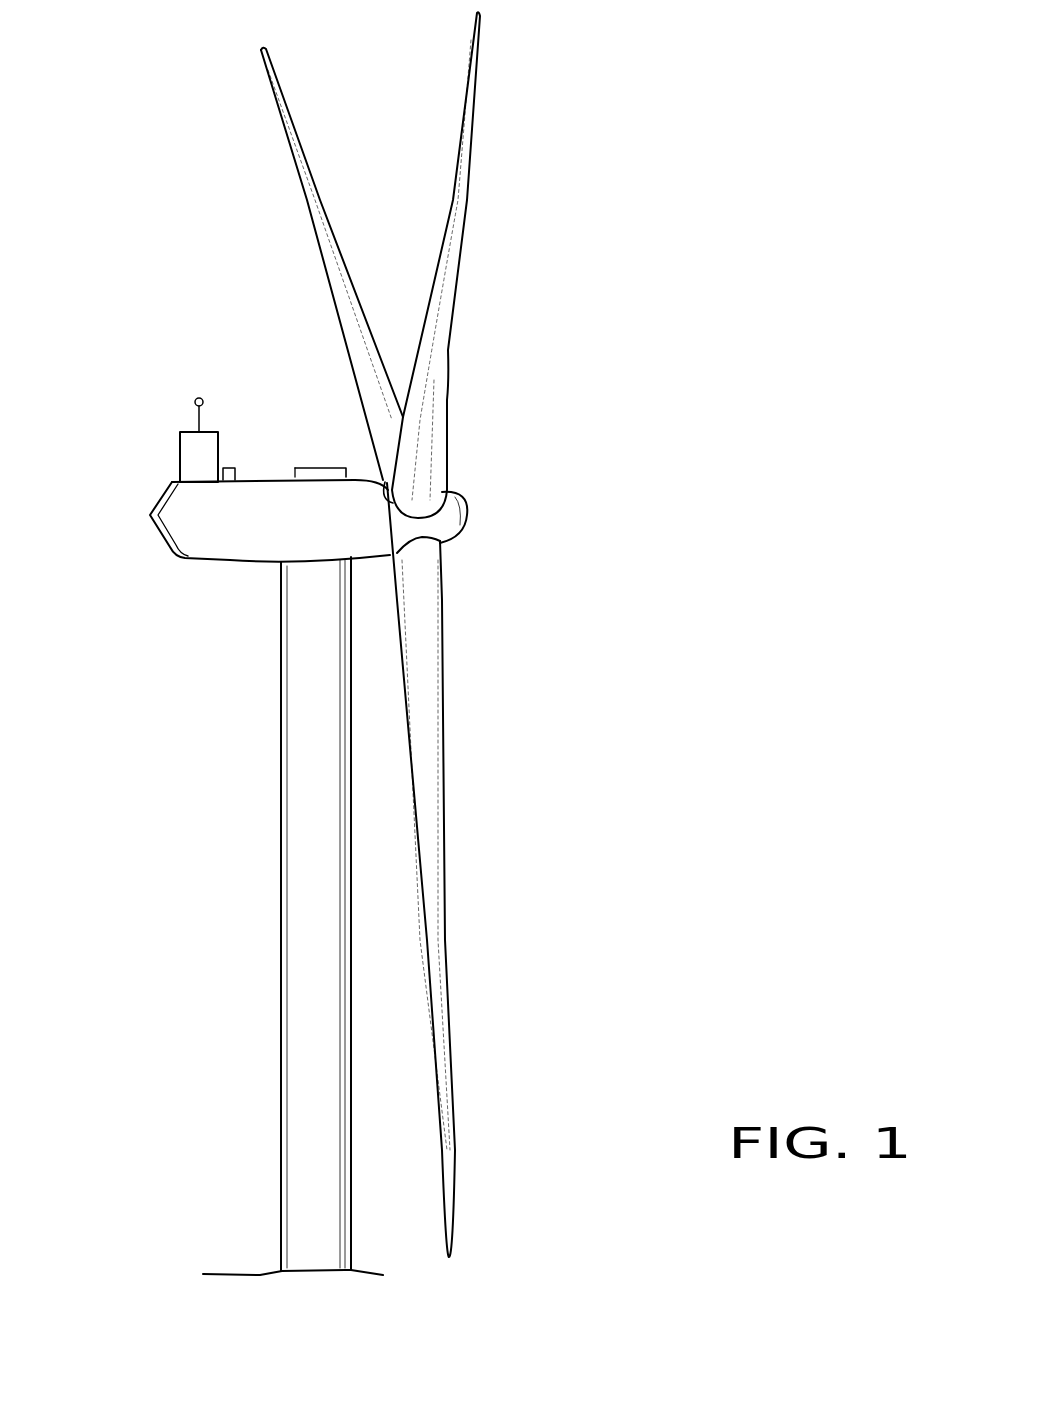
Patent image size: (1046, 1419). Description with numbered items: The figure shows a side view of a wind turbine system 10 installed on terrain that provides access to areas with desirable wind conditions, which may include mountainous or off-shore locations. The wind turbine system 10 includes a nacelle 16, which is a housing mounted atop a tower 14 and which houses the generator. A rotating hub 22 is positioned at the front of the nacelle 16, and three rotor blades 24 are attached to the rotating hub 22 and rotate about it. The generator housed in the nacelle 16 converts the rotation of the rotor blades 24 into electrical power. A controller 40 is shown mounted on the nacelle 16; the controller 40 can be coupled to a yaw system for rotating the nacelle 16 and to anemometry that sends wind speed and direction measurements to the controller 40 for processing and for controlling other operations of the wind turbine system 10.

The wind turbine system 10 is at (130, 306).
The tower 14 is at (282, 728).
The nacelle 16 is at (200, 562).
The rotating hub 22 is at (458, 533).
The rotor blades 24 is at (302, 175).
The controller 40 is at (180, 452).